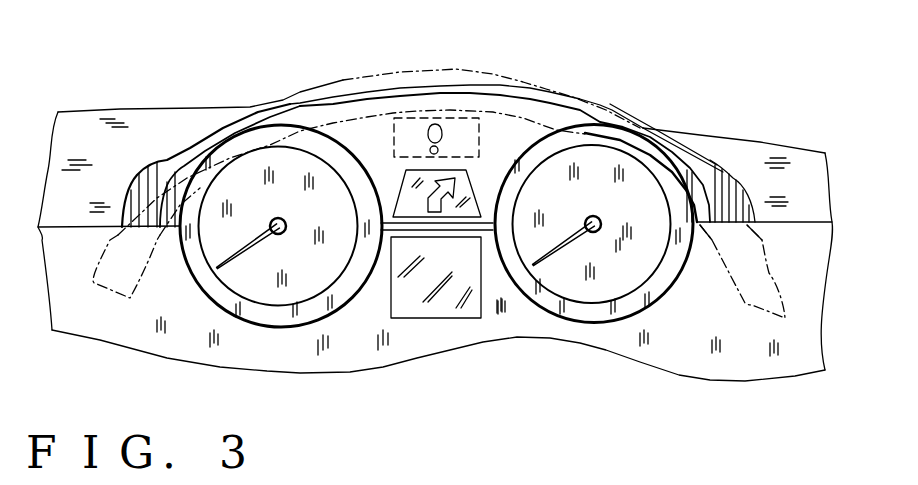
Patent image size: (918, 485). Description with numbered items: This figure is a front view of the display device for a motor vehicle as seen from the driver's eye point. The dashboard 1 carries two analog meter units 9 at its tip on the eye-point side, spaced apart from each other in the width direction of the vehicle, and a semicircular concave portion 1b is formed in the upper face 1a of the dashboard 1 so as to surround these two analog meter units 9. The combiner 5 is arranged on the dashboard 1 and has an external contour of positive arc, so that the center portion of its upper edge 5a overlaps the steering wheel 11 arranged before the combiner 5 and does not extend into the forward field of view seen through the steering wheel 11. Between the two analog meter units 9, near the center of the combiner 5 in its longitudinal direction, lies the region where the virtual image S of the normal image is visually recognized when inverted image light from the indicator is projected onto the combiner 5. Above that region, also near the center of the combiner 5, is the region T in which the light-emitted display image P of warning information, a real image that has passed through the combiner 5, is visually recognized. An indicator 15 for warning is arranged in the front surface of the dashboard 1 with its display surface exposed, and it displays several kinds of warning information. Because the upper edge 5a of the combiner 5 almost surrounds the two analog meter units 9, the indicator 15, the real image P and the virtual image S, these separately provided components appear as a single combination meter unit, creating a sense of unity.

The dashboard 1 is at (810, 148).
The upper face of the dashboard 1a is at (697, 142).
The semicircular concave portion 1b is at (732, 173).
The combiner 5 is at (397, 84).
The upper edge of the combiner 5a is at (520, 96).
The analog meter unit 9 is at (263, 322).
The steering wheel 11 is at (494, 72).
The indicator for warning 15 is at (433, 318).
The virtual image of the normal image S is at (418, 198).
The light-emitted display image P is at (442, 135).
The region T is at (523, 117).